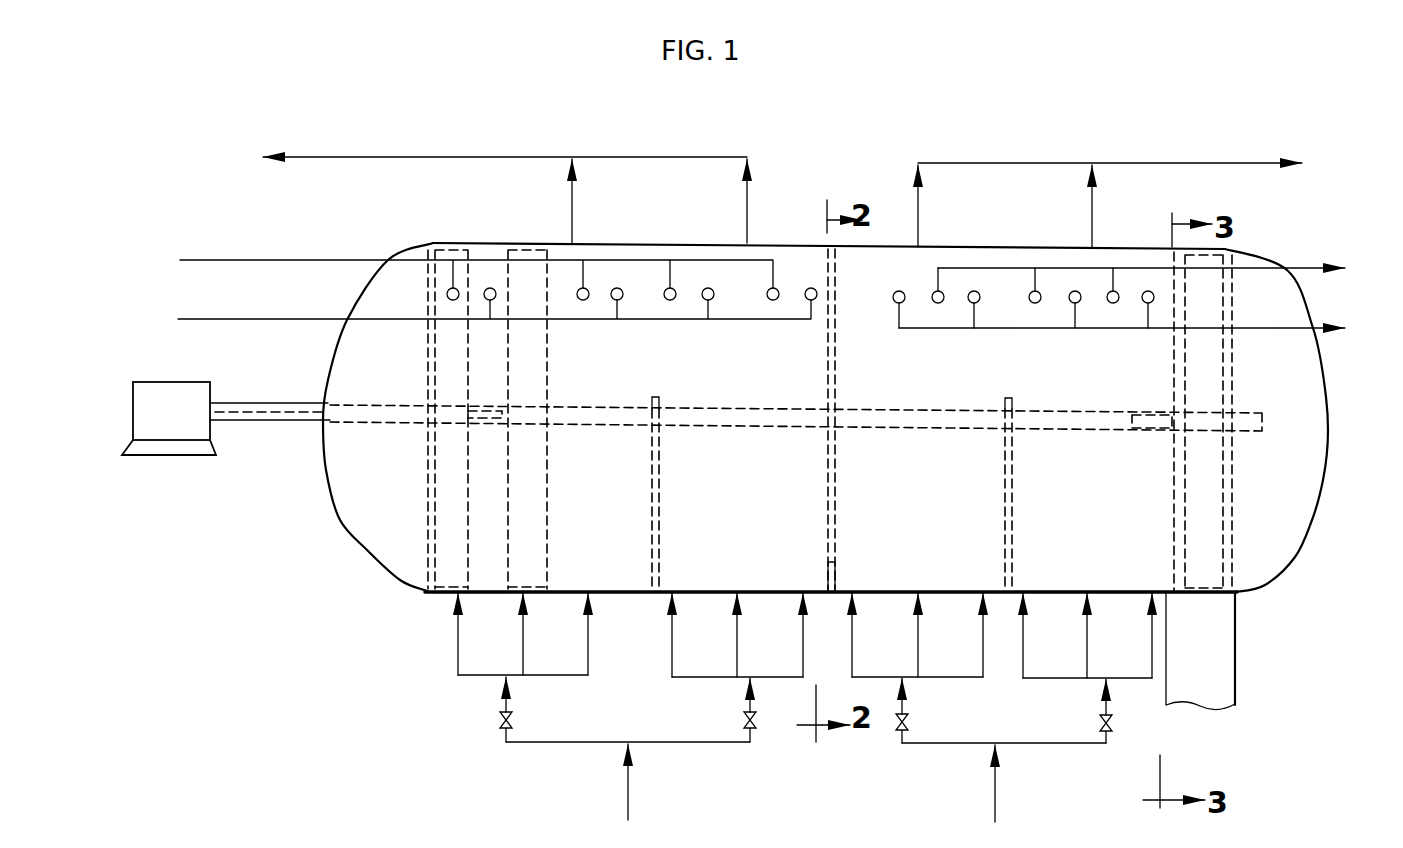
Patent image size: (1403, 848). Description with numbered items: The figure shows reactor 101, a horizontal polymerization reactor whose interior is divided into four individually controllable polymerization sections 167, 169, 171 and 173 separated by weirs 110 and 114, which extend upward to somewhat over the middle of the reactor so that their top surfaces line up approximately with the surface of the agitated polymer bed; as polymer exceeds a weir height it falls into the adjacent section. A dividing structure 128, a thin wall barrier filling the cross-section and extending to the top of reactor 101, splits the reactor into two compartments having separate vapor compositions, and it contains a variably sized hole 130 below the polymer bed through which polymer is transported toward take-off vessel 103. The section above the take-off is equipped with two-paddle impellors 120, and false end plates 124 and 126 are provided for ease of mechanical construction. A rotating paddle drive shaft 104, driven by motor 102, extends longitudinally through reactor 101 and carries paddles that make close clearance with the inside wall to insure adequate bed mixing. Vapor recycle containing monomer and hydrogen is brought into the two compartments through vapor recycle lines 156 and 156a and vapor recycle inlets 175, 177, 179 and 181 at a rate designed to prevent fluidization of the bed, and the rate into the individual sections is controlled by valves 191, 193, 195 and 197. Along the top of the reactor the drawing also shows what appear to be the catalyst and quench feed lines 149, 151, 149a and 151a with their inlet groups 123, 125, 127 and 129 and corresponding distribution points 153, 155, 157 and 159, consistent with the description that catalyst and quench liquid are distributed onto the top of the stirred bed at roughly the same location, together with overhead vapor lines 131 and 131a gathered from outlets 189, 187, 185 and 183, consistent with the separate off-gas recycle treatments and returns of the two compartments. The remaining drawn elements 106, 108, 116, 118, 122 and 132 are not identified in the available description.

The reactor 101 is at (622, 572).
The motor 102 is at (133, 405).
The take-off vessel 103 is at (1222, 673).
The rotating paddle drive shaft 104 is at (270, 422).
The end wall 106 is at (427, 590).
The bearing 108 is at (503, 410).
The weir 110 is at (660, 540).
The weir 114 is at (1014, 540).
The wall 116 is at (1175, 372).
The wall 118 is at (1185, 293).
The two-paddle impellors 120 is at (1210, 373).
The partition 122 is at (532, 453).
The nozzles 123 is at (581, 289).
The false end plate 124 is at (1232, 536).
The nozzles 125 is at (773, 288).
The false end plate 126 is at (423, 527).
The nozzles 127 is at (937, 291).
The dividing structure 128 is at (838, 497).
The nozzles 129 is at (1112, 291).
The hole 130 is at (845, 578).
The vapor header 131 is at (539, 172).
The vapor header 131a is at (1110, 174).
The coupling 132 is at (1133, 422).
The pipe 149 is at (224, 258).
The pipe 149a is at (1143, 251).
The pipe 151 is at (225, 320).
The pipe 151a is at (1283, 330).
The nozzle group 153 is at (497, 296).
The nozzle group 155 is at (760, 348).
The vapor recycle line 156 is at (628, 803).
The vapor recycle line 156a is at (996, 800).
The nozzle group 157 is at (940, 350).
The nozzle group 159 is at (1147, 303).
The polymerization section 167 is at (607, 520).
The polymerization section 169 is at (757, 523).
The polymerization section 171 is at (940, 522).
The polymerization section 173 is at (1103, 521).
The vapor recycle inlet 175 is at (522, 635).
The vapor recycle inlet 177 is at (737, 650).
The vapor recycle inlet 179 is at (918, 650).
The vapor recycle inlet 181 is at (1087, 665).
The vapor outlet 183 is at (1094, 247).
The vapor outlet 185 is at (920, 246).
The vapor outlet 187 is at (749, 245).
The vapor outlet 189 is at (574, 243).
The valve 191 is at (514, 722).
The valve 193 is at (760, 725).
The valve 195 is at (897, 722).
The valve 197 is at (1110, 725).